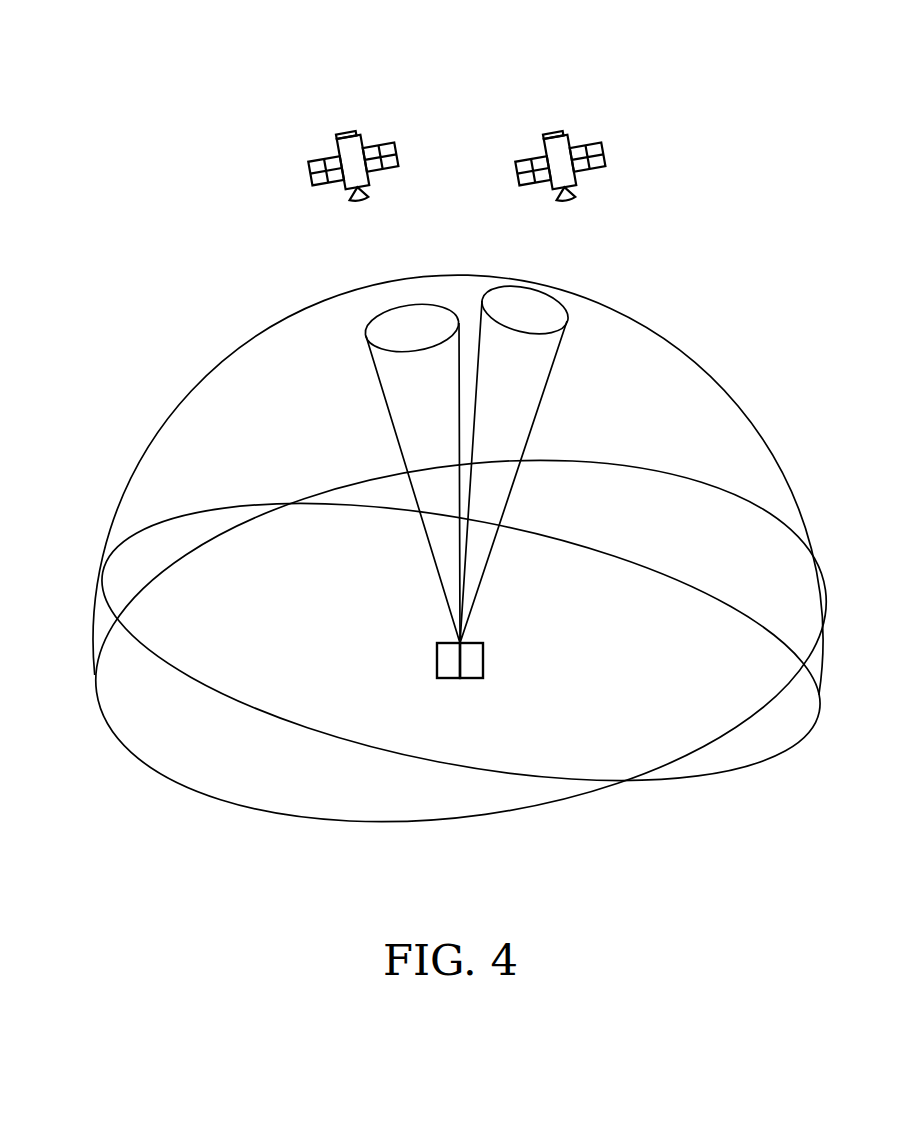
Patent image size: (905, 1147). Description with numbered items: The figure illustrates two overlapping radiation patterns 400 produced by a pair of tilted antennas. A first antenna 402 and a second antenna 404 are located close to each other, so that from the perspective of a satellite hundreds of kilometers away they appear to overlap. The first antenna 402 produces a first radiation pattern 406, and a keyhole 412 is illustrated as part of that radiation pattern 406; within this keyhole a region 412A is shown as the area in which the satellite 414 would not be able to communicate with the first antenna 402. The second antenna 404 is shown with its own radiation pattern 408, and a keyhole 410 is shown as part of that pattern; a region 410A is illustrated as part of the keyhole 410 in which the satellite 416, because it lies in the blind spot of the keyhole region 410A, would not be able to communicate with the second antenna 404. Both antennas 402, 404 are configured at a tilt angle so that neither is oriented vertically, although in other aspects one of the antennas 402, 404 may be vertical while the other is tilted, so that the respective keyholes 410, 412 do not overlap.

The overlapping radiation patterns 400 is at (89, 90).
The first antenna 402 is at (437, 660).
The second antenna 404 is at (483, 660).
The first radiation pattern 406 is at (763, 763).
The second radiation pattern 408 is at (473, 815).
The keyhole 410 is at (436, 408).
The keyhole region 410A is at (431, 340).
The keyhole 412 is at (524, 390).
The region 412A is at (546, 322).
The satellite 414 is at (592, 145).
The satellite 416 is at (385, 145).